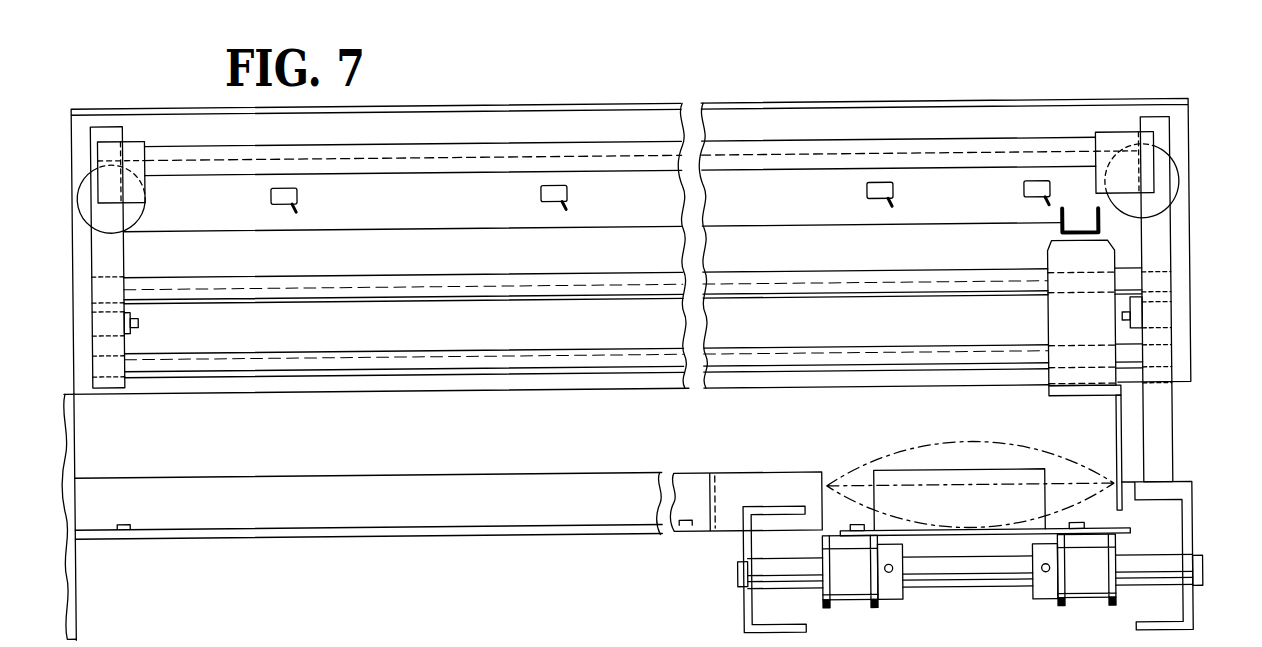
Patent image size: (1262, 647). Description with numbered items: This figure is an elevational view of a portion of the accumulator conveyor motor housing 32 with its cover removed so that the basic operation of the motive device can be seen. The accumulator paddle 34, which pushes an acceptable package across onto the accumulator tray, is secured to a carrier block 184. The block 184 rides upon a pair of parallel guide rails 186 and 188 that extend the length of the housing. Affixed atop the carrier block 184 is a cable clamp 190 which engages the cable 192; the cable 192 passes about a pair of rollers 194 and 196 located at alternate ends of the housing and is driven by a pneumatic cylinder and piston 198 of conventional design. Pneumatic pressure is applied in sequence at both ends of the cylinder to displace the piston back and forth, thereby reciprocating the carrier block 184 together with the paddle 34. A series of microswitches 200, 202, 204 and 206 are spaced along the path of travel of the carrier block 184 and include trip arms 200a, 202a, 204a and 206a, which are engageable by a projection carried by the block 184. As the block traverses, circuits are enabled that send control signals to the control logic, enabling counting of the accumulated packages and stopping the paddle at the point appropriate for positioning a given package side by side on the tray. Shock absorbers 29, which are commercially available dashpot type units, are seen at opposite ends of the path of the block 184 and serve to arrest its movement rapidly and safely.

The shock absorbers 29 is at (138, 325).
The accumulator conveyor motor housing 32 is at (133, 253).
The accumulator paddle 34 is at (1116, 437).
The carrier block 184 is at (1070, 341).
The guide rail 186 is at (872, 328).
The guide rail 188 is at (968, 369).
The cable clamp 190 is at (1058, 240).
The cable 192 is at (915, 236).
The roller 194 is at (1173, 186).
The roller 196 is at (80, 192).
The pneumatic cylinder and piston 198 is at (600, 153).
The microswitch 200 is at (1040, 190).
The trip arm 200a is at (1048, 214).
The microswitch 202 is at (880, 190).
The trip arm 202a is at (897, 213).
The microswitch 204 is at (556, 190).
The trip arm 204a is at (575, 212).
The microswitch 206 is at (283, 190).
The trip arm 206a is at (273, 213).